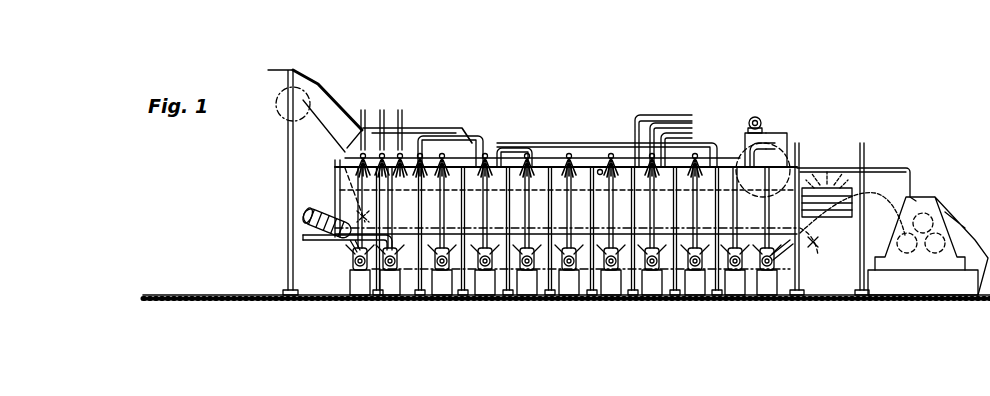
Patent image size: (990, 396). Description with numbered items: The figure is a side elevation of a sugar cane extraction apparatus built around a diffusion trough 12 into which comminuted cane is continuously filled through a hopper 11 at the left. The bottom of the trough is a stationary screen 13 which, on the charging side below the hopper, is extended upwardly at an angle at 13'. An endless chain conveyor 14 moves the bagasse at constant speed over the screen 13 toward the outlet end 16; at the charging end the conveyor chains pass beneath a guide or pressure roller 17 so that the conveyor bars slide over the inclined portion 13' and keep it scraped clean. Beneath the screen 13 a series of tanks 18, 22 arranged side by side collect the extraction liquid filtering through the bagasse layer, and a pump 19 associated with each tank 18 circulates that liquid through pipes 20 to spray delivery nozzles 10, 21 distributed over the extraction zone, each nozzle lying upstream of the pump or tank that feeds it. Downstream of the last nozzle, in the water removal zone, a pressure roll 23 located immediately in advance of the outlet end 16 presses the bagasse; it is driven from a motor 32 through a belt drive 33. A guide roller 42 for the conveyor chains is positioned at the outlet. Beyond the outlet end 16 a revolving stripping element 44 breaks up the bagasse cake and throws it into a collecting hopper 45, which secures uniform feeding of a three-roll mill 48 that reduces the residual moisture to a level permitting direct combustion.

The spray delivery nozzle 10 is at (667, 155).
The hopper 11 is at (326, 107).
The diffusion trough 12 is at (600, 170).
The stationary screen 13 is at (630, 252).
The inclined screen portion 13' is at (290, 224).
The endless chain conveyor 14 is at (542, 272).
The outlet end 16 is at (800, 166).
The guide or pressure roller 17 is at (369, 220).
The tank 18 is at (404, 250).
The pump 19 is at (354, 260).
The pipe 20 is at (590, 255).
The spray delivery nozzle 21 is at (570, 160).
The tank 22 is at (790, 246).
The pressure roll 23 is at (753, 157).
The motor 32 is at (757, 118).
The belt drive 33 is at (780, 147).
The guide roller 42 is at (813, 245).
The revolving element 44 is at (831, 172).
The collecting hopper 45 is at (896, 173).
The three-roll mill 48 is at (920, 262).